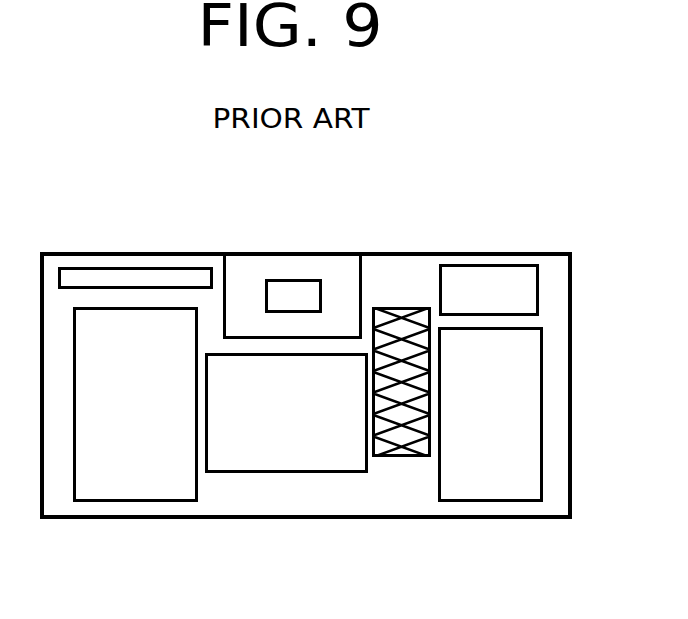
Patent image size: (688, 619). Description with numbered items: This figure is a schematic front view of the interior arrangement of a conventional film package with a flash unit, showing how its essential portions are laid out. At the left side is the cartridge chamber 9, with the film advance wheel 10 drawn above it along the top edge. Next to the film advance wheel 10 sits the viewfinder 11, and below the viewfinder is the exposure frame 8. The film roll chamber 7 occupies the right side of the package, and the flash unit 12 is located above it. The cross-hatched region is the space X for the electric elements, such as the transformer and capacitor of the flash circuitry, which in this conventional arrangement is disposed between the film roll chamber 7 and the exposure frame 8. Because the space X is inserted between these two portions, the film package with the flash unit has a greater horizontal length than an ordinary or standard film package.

The film roll chamber 7 is at (480, 491).
The exposure frame 8 is at (283, 473).
The cartridge chamber 9 is at (139, 490).
The film advance wheel 10 is at (100, 268).
The viewfinder 11 is at (250, 268).
The flash unit 12 is at (490, 277).
The space for the electric elements X is at (400, 310).